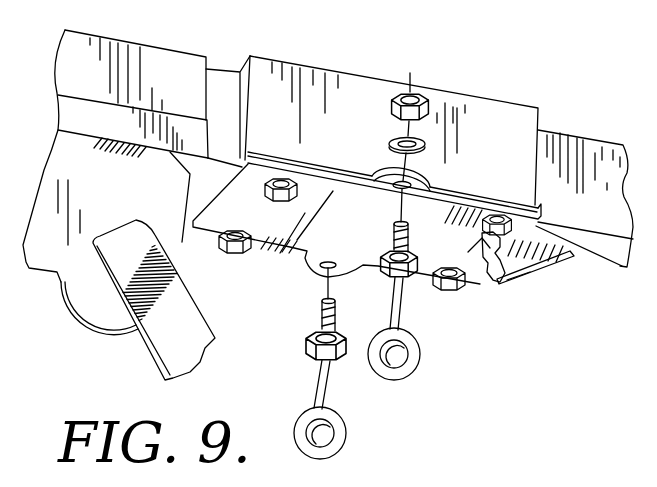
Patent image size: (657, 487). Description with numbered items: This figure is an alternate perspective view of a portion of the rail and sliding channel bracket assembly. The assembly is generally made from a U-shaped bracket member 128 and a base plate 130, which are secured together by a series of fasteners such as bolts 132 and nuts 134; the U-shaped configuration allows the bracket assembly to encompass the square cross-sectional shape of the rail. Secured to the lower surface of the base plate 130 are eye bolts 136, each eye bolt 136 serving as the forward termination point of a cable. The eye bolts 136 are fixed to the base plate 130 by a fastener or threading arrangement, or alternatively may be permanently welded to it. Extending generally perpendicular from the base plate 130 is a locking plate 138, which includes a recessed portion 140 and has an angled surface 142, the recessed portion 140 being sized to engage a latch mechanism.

The U-shaped bracket member 128 is at (360, 84).
The base plate 130 is at (290, 252).
The bolt 132 is at (467, 287).
The nut 134 is at (530, 212).
The eye bolt 136 is at (377, 367).
The locking plate 138 is at (570, 255).
The recessed portion 140 is at (484, 247).
The angled surface 142 is at (518, 272).